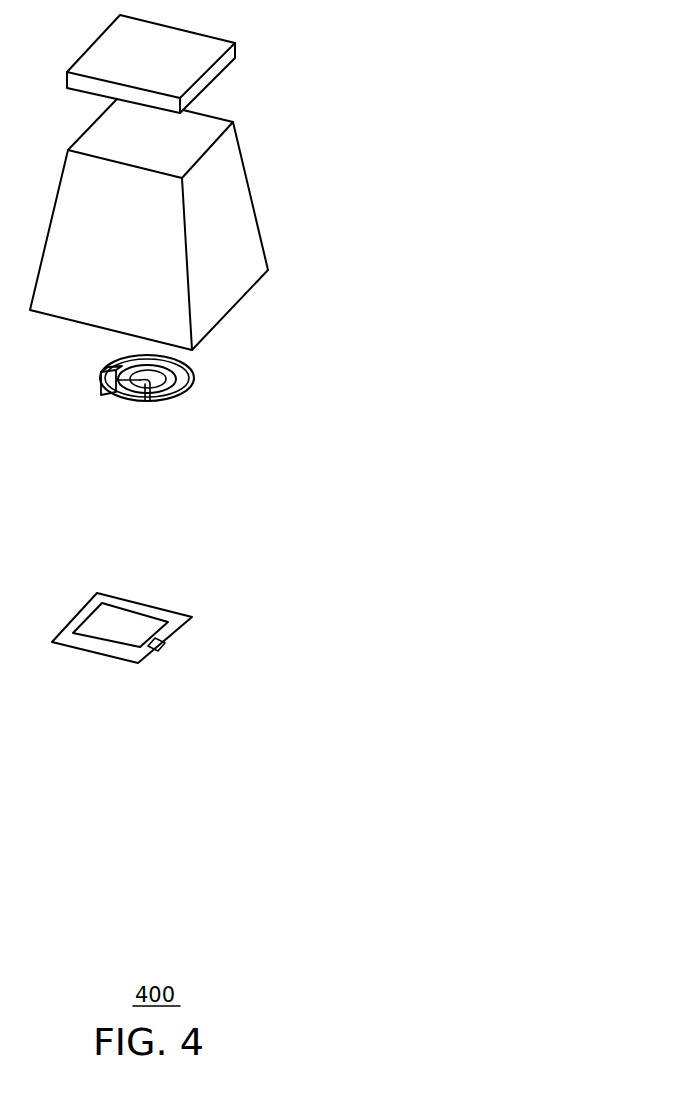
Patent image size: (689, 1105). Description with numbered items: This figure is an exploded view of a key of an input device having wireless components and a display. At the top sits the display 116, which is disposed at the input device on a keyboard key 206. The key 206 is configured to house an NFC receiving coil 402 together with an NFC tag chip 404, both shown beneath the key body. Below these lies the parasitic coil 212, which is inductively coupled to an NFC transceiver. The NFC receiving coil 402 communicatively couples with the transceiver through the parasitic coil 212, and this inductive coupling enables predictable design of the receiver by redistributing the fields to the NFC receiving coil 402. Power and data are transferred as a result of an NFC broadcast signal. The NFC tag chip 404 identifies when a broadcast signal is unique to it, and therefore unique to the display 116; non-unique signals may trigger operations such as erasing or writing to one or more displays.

The display 116 is at (235, 45).
The key 206 is at (248, 170).
The NFC receiving coil 402 is at (190, 363).
The NFC tag chip 404 is at (108, 394).
The parasitic coil 212 is at (182, 627).